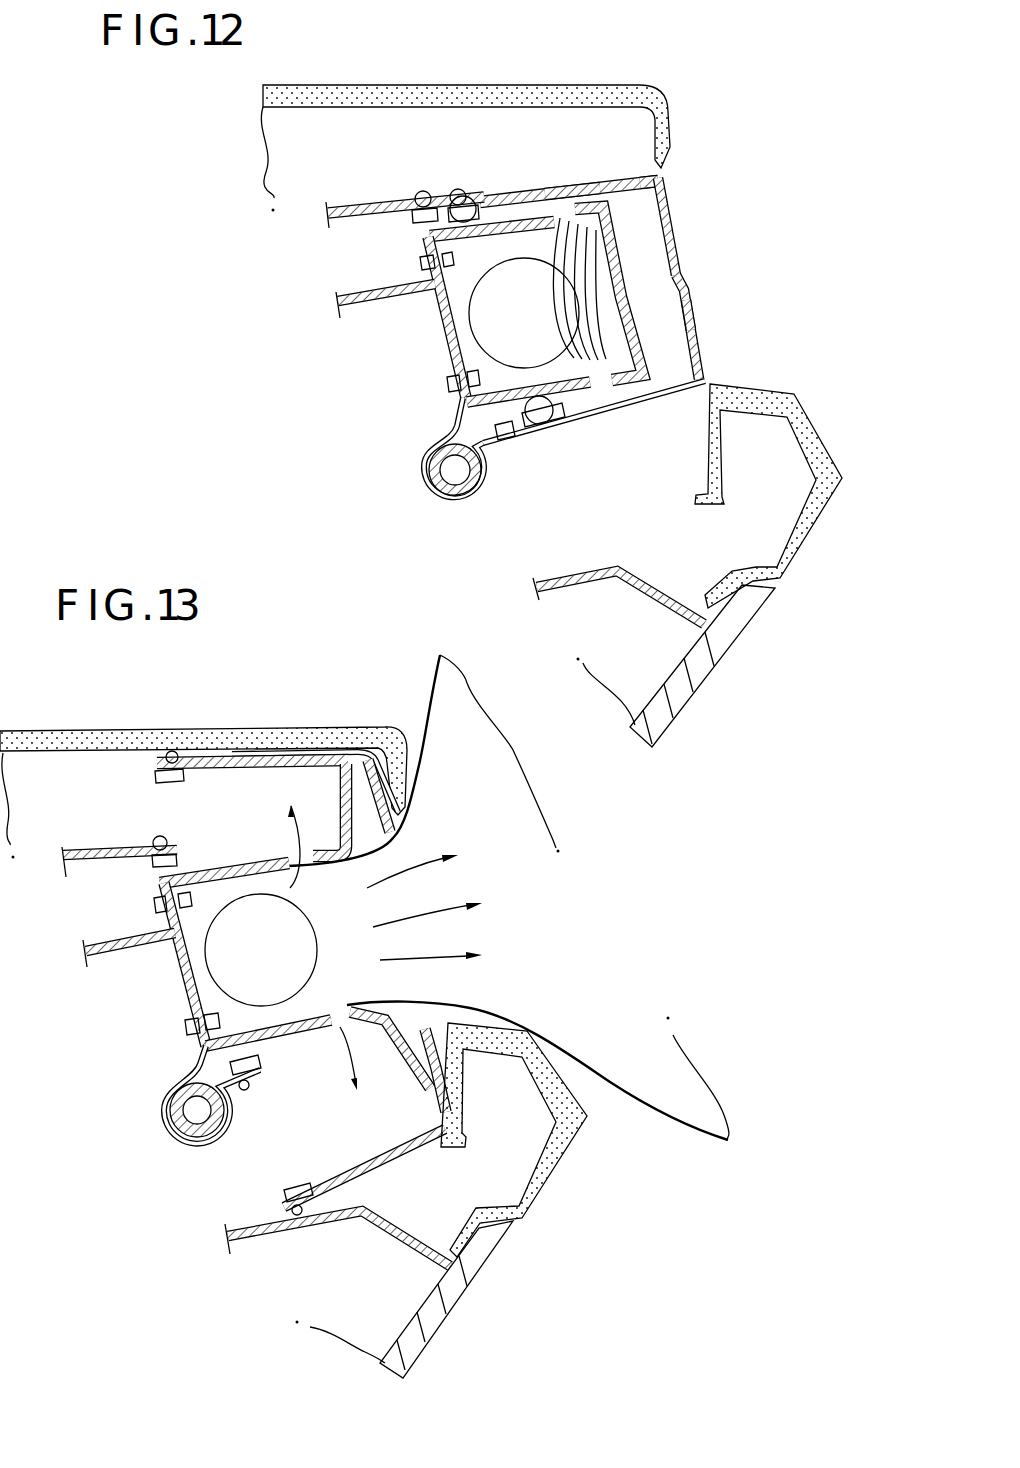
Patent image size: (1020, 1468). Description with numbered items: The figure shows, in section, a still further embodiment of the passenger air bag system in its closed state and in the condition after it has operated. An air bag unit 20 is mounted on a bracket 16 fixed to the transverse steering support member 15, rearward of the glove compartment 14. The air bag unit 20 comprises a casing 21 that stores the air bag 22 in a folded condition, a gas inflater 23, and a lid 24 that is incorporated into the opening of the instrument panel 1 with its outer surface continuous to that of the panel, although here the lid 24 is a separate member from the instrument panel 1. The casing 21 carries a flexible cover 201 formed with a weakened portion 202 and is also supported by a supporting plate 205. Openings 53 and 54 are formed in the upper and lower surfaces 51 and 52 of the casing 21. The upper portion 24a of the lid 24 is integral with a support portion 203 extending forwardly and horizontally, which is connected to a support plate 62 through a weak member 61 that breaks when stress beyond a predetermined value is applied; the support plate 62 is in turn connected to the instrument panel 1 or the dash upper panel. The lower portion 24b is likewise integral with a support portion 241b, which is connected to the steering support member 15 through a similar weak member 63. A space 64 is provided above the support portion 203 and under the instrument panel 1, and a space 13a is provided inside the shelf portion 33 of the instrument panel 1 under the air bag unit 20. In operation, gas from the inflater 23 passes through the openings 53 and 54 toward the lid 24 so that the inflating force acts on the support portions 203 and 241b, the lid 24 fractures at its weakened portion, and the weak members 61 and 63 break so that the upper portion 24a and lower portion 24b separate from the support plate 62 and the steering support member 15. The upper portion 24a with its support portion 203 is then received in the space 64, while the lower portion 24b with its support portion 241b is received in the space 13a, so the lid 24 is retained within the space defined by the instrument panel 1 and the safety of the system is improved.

In FIG. 12, the instrument panel 1 is at (516, 85).
In FIG. 13, the instrument panel 1 is at (92, 731).
In FIG. 12, the space 13a is at (622, 522).
In FIG. 13, the space 13a is at (437, 1200).
In FIG. 12, the glove compartment 14 is at (710, 682).
In FIG. 13, the glove compartment 14 is at (496, 1272).
In FIG. 12, the steering support member 15 is at (455, 497).
In FIG. 13, the steering support member 15 is at (198, 1139).
In FIG. 12, the bracket 16 is at (441, 434).
In FIG. 12, the air bag unit 20 is at (561, 133).
In FIG. 13, the air bag unit 20 is at (307, 783).
In FIG. 12, the casing 21 is at (502, 225).
In FIG. 13, the casing 21 is at (207, 877).
In FIG. 12, the air bag 22 is at (585, 257).
In FIG. 13, the air bag 22 is at (423, 783).
In FIG. 12, the gas inflater 23 is at (475, 322).
In FIG. 13, the gas inflater 23 is at (246, 904).
In FIG. 12, the lid 24 is at (738, 278).
In FIG. 12, the upper portion 24a is at (676, 237).
In FIG. 13, the upper portion 24a is at (380, 727).
In FIG. 12, the lower portion 24b is at (726, 315).
In FIG. 13, the lower portion 24b is at (434, 1030).
In FIG. 12, the shelf portion 33 is at (782, 392).
In FIG. 13, the shelf portion 33 is at (510, 1038).
In FIG. 12, the upper surface 51 is at (444, 308).
In FIG. 12, the lower surface 52 is at (462, 412).
In FIG. 12, the opening 53 is at (588, 184).
In FIG. 12, the opening 54 is at (603, 380).
In FIG. 12, the weak member 61 is at (482, 202).
In FIG. 12, the support plate 62 is at (378, 208).
In FIG. 13, the support plate 62 is at (112, 848).
In FIG. 12, the weak member 63 is at (557, 437).
In FIG. 12, the space 64 is at (418, 172).
In FIG. 12, the flexible cover 201 is at (620, 236).
In FIG. 13, the flexible cover 201 is at (341, 812).
In FIG. 12, the weakened portion 202 is at (686, 342).
In FIG. 12, the support portion 203 is at (562, 186).
In FIG. 13, the support portion 203 is at (236, 758).
In FIG. 12, the supporting plate 205 is at (383, 292).
In FIG. 12, the support portion 241b is at (644, 398).
In FIG. 13, the support portion 241b is at (381, 1158).